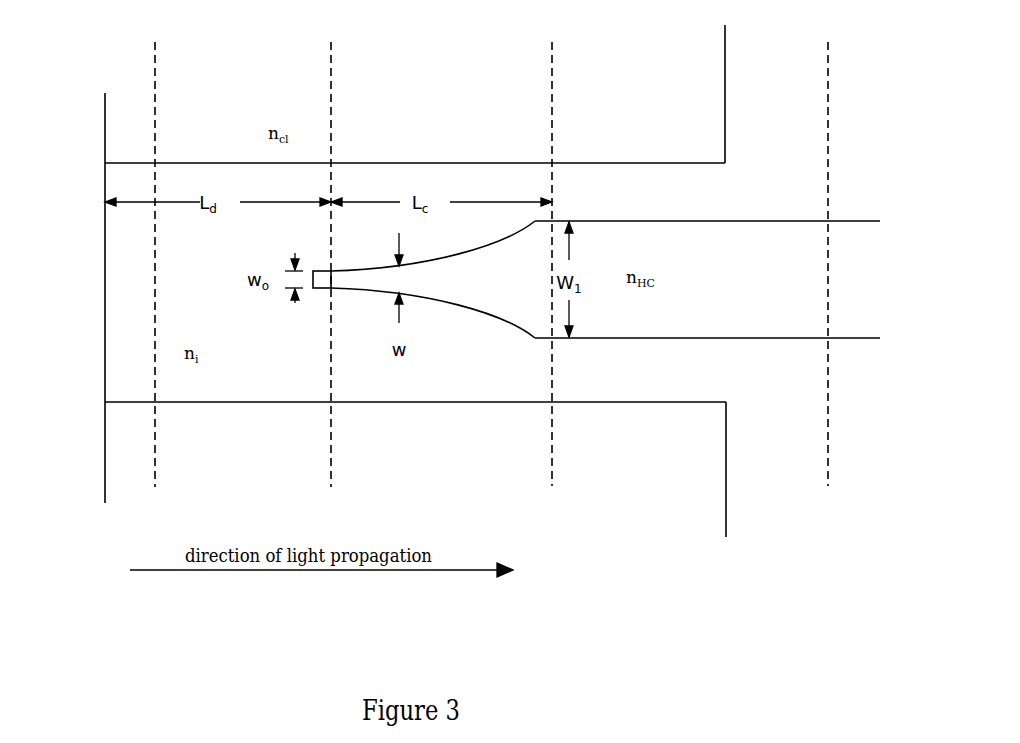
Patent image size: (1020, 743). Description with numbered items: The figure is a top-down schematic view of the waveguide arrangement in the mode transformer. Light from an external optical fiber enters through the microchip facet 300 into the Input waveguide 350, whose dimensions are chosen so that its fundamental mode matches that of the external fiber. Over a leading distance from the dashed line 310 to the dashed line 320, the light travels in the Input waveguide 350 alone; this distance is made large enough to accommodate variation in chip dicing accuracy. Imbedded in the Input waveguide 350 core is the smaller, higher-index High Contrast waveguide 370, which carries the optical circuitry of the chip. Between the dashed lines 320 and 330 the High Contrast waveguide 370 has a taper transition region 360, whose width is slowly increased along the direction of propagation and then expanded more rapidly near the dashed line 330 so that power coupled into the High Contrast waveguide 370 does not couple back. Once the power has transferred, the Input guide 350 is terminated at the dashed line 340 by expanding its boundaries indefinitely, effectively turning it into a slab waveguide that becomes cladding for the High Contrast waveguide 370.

The microchip facet 300 is at (104, 250).
The input waveguide cross-section location 310 is at (155, 250).
The start of taper transition region 320 is at (331, 250).
The end of taper transition region 330 is at (551, 250).
The input guide termination 340 is at (827, 250).
The input waveguide 350 is at (226, 404).
The tapered waveguide section 360 is at (432, 305).
The high contrast waveguide 370 is at (758, 220).